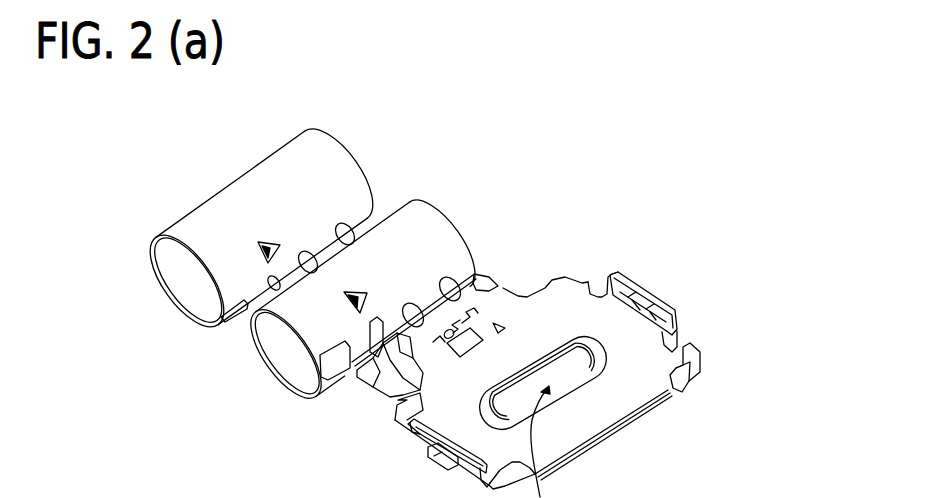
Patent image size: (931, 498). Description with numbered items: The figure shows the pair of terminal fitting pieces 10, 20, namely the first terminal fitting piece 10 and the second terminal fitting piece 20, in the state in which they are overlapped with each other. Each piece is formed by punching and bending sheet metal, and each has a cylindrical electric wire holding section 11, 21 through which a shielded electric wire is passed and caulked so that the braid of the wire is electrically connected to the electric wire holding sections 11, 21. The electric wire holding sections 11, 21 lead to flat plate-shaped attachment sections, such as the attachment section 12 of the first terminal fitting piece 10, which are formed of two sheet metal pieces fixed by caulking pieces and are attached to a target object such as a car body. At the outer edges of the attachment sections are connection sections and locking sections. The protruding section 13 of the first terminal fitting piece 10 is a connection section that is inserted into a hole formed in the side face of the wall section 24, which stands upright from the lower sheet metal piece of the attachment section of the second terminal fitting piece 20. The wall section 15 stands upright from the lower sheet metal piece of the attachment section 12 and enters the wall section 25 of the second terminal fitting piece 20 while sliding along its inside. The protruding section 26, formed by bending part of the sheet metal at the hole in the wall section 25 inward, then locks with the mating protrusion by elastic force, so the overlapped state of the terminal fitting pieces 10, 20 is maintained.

The first terminal fitting piece 10 is at (607, 387).
The second terminal fitting piece 20 is at (717, 364).
The electric wire holding section 11 is at (437, 234).
The electric wire holding section 21 is at (210, 226).
The attachment section 12 is at (581, 283).
The protruding section 13 is at (440, 460).
The wall section 15 is at (630, 282).
The wall section 24 is at (410, 437).
The wall section 25 is at (678, 330).
The protruding section 26 is at (647, 297).